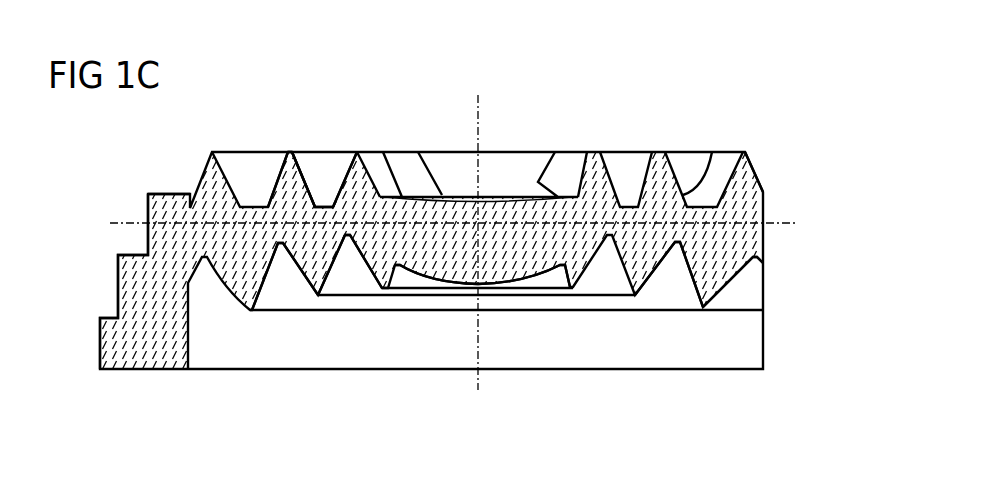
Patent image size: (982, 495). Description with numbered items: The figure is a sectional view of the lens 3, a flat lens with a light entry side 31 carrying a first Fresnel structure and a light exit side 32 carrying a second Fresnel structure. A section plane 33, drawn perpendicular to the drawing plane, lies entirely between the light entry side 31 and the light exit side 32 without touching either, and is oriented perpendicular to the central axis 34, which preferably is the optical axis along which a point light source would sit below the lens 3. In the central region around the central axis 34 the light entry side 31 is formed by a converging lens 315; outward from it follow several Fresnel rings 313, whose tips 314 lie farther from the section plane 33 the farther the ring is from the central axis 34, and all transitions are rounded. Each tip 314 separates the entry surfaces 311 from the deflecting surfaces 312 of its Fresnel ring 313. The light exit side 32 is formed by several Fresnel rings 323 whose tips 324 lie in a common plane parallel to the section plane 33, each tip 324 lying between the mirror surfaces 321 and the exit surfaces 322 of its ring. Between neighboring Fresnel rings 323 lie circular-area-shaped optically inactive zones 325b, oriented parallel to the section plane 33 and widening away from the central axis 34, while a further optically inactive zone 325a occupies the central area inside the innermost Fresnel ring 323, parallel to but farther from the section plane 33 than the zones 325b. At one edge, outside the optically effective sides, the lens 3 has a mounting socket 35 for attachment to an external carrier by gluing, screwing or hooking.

The lens 3 is at (826, 107).
The light entry side 31 is at (833, 237).
The light exit side 32 is at (833, 150).
The section plane 33 is at (777, 224).
The central axis 34 is at (479, 113).
The mounting socket 35 is at (118, 291).
The entry surfaces 311 is at (336, 270).
The deflecting surfaces 312 is at (291, 274).
The Fresnel rings 313 is at (719, 283).
The tips 314 is at (705, 309).
The converging lens 315 is at (530, 287).
The mirror surfaces 321 is at (300, 172).
The exit surfaces 322 is at (277, 190).
The Fresnel rings 323 is at (760, 175).
The tips 324 is at (745, 152).
The further optically inactive zone 325a is at (460, 197).
The optically inactive zones 325b is at (326, 206).